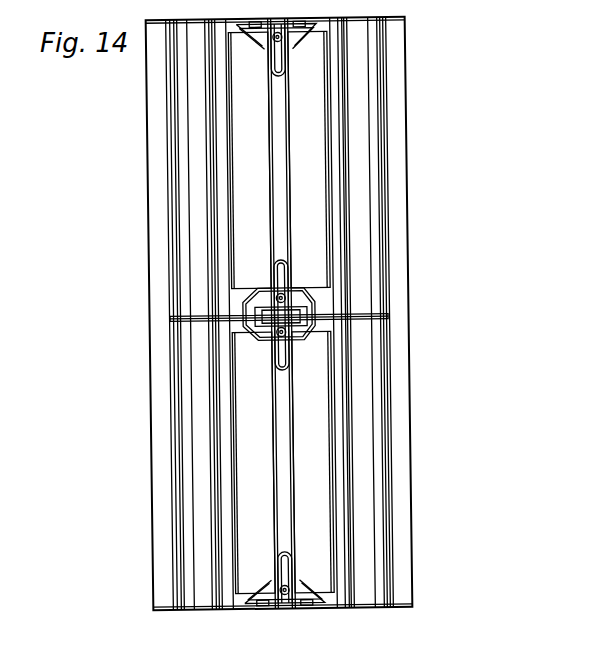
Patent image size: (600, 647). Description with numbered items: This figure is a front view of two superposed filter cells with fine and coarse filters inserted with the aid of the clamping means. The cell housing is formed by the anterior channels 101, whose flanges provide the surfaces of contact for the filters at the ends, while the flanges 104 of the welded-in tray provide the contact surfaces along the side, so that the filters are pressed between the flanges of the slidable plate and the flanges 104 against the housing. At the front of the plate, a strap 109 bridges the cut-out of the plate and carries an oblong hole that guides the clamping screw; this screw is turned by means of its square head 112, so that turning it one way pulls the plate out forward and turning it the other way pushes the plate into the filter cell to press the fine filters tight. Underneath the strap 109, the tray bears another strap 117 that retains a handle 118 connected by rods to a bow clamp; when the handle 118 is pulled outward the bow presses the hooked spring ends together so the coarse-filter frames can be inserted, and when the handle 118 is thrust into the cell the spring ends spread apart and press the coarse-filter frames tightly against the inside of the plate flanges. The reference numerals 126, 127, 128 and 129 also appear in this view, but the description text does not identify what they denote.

The anterior channels 101 is at (155, 170).
The left guide rail 126 is at (195, 198).
The left inner rail 128 is at (223, 250).
The right inner rail 129 is at (335, 97).
The right guide rail 127 is at (358, 162).
The handle 118 is at (287, 275).
The square head 112 is at (289, 298).
The strap 109 is at (258, 292).
The strap 117 is at (247, 322).
The flanges 104 is at (388, 317).